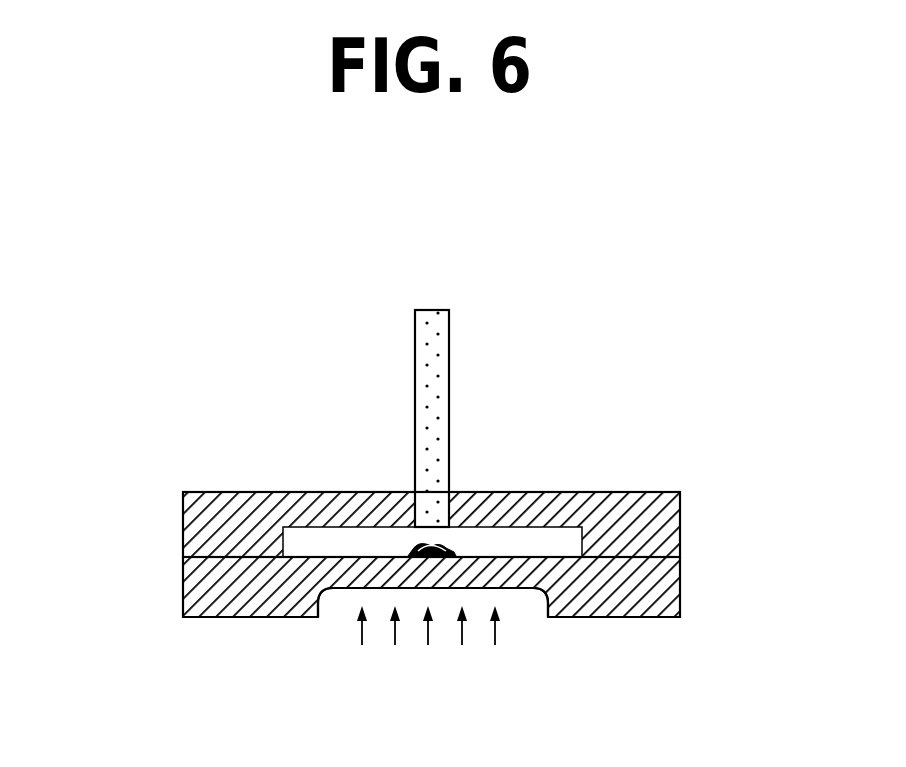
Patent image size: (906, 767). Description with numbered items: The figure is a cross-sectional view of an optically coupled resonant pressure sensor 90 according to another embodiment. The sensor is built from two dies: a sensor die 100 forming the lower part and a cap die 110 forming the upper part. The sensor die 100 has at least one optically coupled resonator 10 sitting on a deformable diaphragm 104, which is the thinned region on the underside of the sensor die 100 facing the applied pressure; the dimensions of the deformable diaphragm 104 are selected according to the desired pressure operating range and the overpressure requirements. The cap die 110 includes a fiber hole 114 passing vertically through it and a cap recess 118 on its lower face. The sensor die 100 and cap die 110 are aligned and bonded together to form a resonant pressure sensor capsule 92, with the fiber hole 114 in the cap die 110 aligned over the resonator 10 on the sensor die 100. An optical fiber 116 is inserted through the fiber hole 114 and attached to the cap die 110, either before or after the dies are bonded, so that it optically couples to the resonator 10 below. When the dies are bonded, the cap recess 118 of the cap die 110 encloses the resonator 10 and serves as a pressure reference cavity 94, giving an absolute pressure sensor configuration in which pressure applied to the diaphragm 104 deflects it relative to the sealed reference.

The optically coupled resonant pressure sensor 90 is at (178, 286).
The optically coupled resonator 10 is at (420, 543).
The resonant pressure sensor capsule 92 is at (265, 493).
The cap recess 118 is at (333, 542).
The pressure reference cavity 94 is at (313, 543).
The optical fiber 116 is at (449, 403).
The fiber hole 114 is at (458, 505).
The cap die 110 is at (681, 523).
The sensor die 100 is at (681, 588).
The deformable diaphragm 104 is at (517, 592).